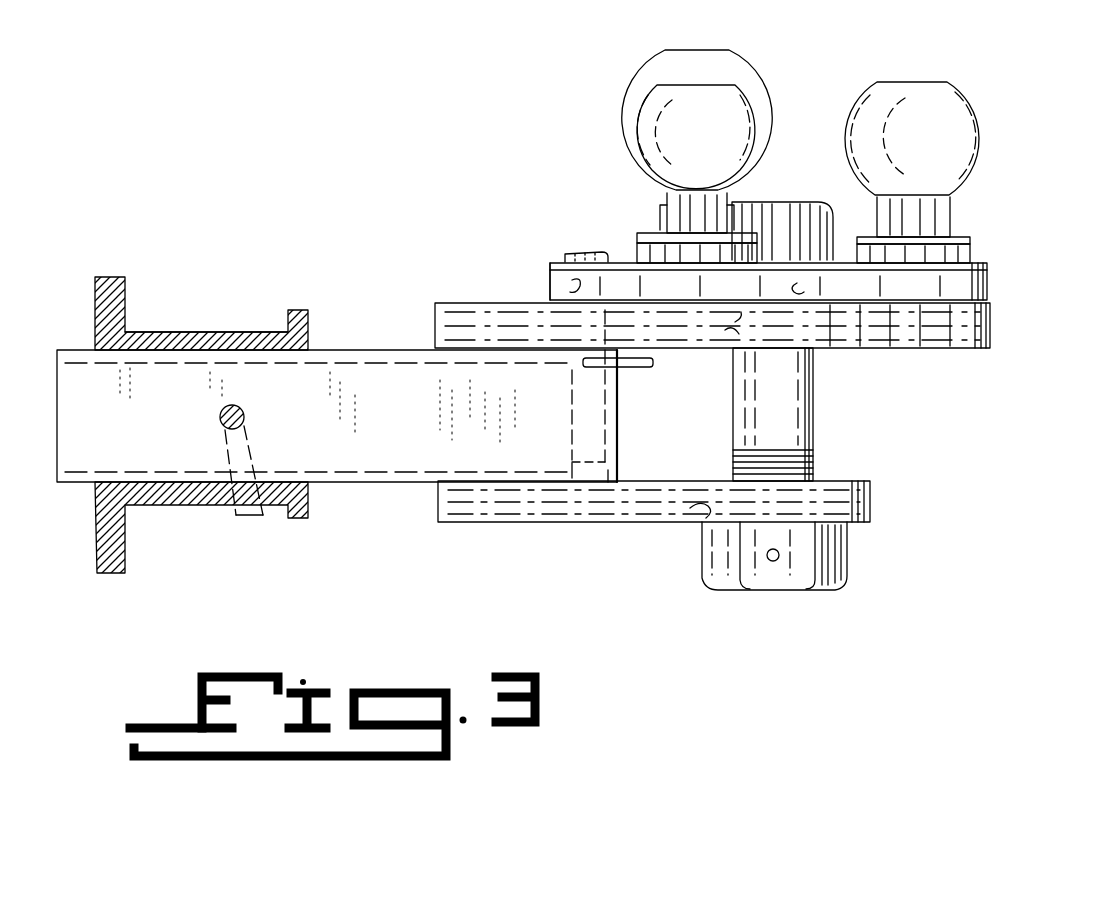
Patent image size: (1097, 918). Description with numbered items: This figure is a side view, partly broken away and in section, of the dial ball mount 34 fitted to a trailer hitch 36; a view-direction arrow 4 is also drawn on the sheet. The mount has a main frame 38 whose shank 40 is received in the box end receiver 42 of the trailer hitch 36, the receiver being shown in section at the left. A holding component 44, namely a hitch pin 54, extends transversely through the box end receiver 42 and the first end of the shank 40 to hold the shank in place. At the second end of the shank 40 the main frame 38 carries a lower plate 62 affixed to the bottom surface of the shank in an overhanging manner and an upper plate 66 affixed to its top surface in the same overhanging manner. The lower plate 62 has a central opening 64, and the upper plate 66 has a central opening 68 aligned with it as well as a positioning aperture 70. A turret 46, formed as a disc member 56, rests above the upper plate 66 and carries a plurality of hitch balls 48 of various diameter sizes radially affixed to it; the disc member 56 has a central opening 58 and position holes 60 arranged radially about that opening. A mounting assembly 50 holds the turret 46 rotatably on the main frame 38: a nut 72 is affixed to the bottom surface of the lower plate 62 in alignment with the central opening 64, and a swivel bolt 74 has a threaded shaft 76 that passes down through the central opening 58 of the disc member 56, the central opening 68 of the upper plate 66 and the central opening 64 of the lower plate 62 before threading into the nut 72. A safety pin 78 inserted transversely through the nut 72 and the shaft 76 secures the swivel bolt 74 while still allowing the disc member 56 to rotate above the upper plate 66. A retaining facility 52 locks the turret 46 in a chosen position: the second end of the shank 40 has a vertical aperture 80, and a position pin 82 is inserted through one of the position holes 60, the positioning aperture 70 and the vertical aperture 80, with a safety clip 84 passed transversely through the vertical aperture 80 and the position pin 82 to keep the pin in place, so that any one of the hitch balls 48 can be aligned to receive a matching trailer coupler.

The section view arrow 4 is at (503, 150).
The dial ball mount 34 is at (446, 241).
The trailer hitch 36 is at (128, 296).
The main frame 38 is at (494, 533).
The shank 40 is at (355, 385).
The box end receiver 42 is at (240, 338).
The holding component 44 is at (243, 522).
The turret 46 is at (990, 269).
The hitch balls 48 is at (901, 98).
The mounting assembly 50 is at (826, 388).
The retaining facility 52 is at (593, 243).
The hitch pin 54 is at (221, 417).
The disc member 56 is at (995, 278).
The central opening 58 is at (798, 283).
The position holes 60 is at (537, 273).
The lower plate 62 is at (876, 490).
The central opening 64 is at (692, 512).
The upper plate 66 is at (993, 320).
The central opening 68 is at (738, 326).
The positioning aperture 70 is at (578, 324).
The nut 72 is at (836, 554).
The swivel bolt 74 is at (783, 222).
The threaded shaft 76 is at (818, 456).
The safety pin 78 is at (773, 562).
The vertical aperture 80 is at (624, 428).
The position pin 82 is at (565, 256).
The safety clip 84 is at (655, 370).